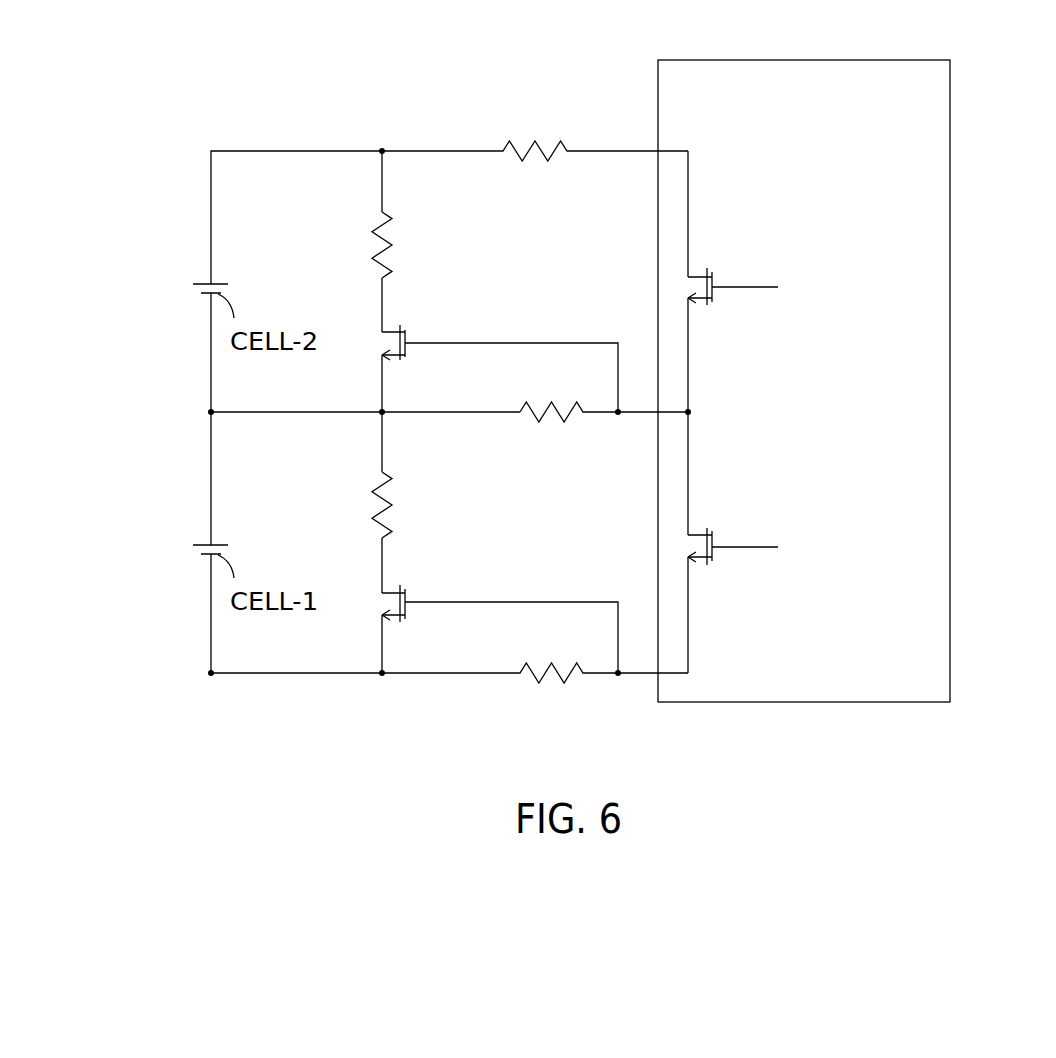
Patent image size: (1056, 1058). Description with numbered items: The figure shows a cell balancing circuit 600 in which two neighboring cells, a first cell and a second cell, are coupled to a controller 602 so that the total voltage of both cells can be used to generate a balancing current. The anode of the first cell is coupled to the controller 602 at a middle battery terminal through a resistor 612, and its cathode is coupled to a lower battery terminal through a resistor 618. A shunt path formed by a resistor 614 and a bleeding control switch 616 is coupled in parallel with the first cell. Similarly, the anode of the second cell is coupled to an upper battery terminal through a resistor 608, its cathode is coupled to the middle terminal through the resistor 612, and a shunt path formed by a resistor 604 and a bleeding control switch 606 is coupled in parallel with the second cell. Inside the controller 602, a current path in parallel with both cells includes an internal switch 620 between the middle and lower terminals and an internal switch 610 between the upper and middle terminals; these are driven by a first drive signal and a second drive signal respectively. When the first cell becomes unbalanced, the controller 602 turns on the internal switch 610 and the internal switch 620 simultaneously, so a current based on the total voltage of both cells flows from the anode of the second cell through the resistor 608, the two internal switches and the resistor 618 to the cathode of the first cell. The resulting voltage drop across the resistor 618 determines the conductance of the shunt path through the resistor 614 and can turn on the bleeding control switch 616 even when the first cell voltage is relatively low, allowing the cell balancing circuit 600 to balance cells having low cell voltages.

The cell balancing circuit 600 is at (138, 157).
The controller 602 is at (950, 92).
The resistor 604 is at (385, 248).
The bleeding control switch 606 is at (408, 348).
The resistor 608 is at (553, 150).
The internal switch 610 is at (715, 280).
The resistor 612 is at (573, 415).
The resistor 614 is at (387, 510).
The bleeding control switch 616 is at (410, 610).
The resistor 618 is at (573, 676).
The internal switch 620 is at (715, 540).